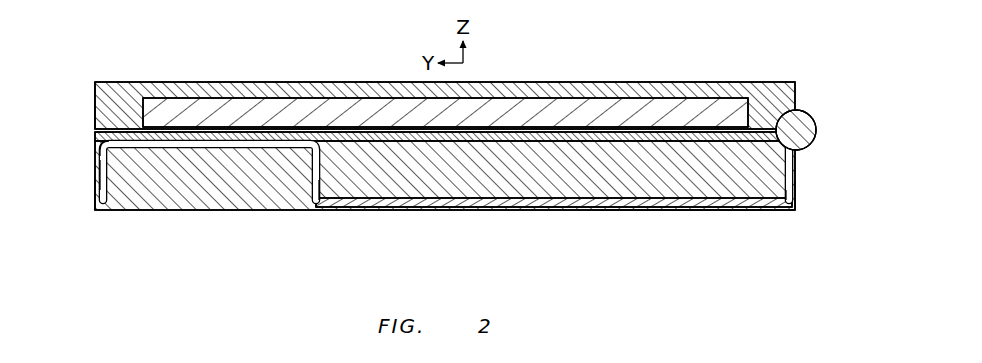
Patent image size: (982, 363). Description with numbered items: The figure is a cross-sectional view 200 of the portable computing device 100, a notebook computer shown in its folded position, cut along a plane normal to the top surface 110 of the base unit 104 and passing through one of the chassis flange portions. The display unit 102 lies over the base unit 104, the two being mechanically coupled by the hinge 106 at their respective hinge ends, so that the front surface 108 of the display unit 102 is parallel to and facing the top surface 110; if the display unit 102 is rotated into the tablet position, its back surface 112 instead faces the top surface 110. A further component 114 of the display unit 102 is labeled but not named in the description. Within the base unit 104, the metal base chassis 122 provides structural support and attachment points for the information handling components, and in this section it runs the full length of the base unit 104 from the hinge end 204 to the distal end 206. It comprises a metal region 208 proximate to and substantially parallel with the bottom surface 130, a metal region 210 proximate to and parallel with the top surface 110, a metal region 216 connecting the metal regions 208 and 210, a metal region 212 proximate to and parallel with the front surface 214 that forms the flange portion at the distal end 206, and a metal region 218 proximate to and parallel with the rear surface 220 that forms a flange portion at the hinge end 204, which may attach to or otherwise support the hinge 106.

The cross-sectional view 200 is at (90, 59).
The portable computing device 100 is at (209, 251).
The display unit 102 is at (591, 79).
The base unit 104 is at (593, 212).
The hinge 106 is at (806, 112).
The front surface 108 is at (113, 121).
The top surface 110 is at (396, 135).
The back surface 112 is at (197, 82).
The encapsulant layer 114 is at (333, 96).
The metal base chassis 122 is at (453, 206).
The bottom surface 130 is at (258, 212).
The hinge end 204 is at (795, 214).
The distal end 206 is at (95, 213).
The metal region 208 is at (687, 208).
The metal region 210 is at (178, 143).
The metal region 212 is at (99, 176).
The front surface 214 is at (99, 155).
The metal region 216 is at (332, 204).
The metal region 218 is at (794, 156).
The rear surface 220 is at (795, 193).